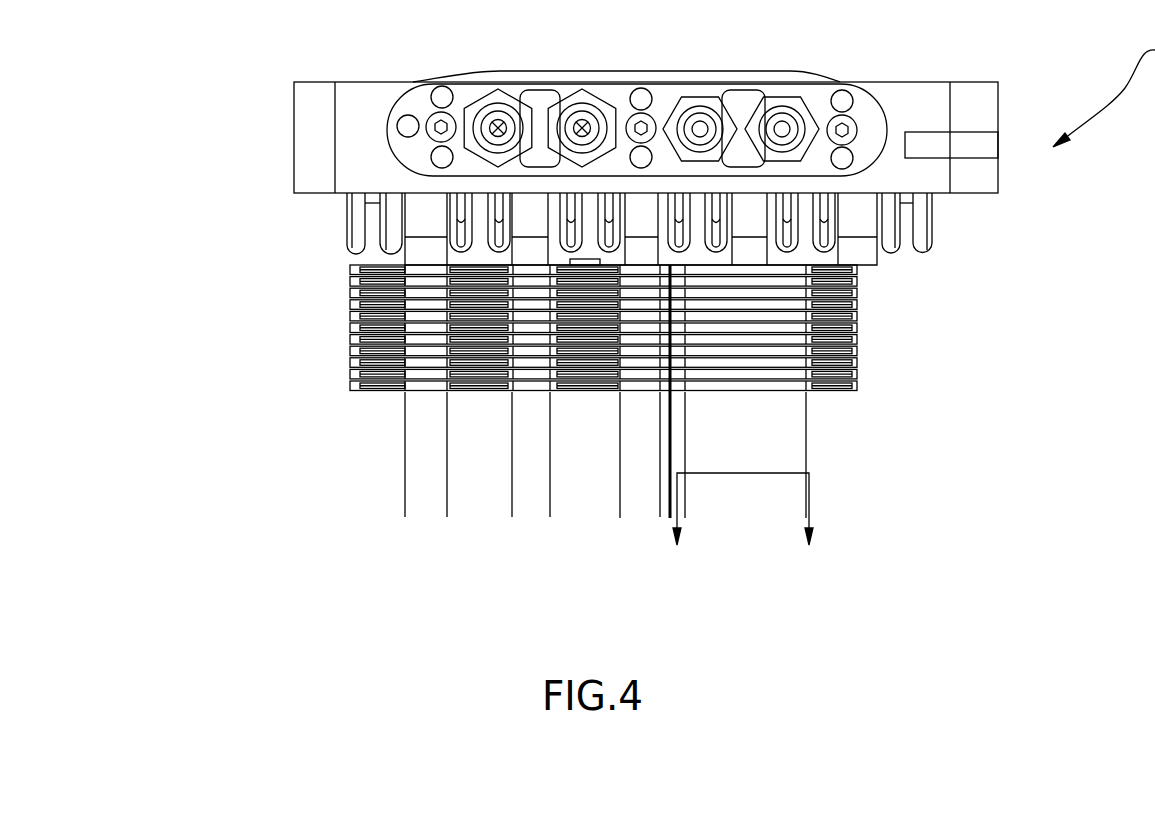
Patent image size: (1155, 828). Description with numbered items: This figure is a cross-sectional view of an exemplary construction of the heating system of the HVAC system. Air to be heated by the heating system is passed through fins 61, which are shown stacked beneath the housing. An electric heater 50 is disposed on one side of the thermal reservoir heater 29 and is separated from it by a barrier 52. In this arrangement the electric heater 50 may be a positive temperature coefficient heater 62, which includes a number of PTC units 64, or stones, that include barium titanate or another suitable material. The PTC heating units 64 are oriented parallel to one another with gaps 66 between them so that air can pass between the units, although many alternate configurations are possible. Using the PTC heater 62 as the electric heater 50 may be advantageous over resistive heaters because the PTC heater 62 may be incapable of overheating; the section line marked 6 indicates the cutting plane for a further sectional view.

The electric heater 50 is at (371, 442).
The fins 61 is at (848, 358).
The positive temperature coefficient (PTC) heater 62 is at (384, 481).
The PTC units 64 is at (413, 502).
The gaps 66 is at (488, 477).
The barrier 52 is at (668, 510).
The thermal reservoir heater 29 is at (814, 456).
The section view indicator 6 is at (744, 559).